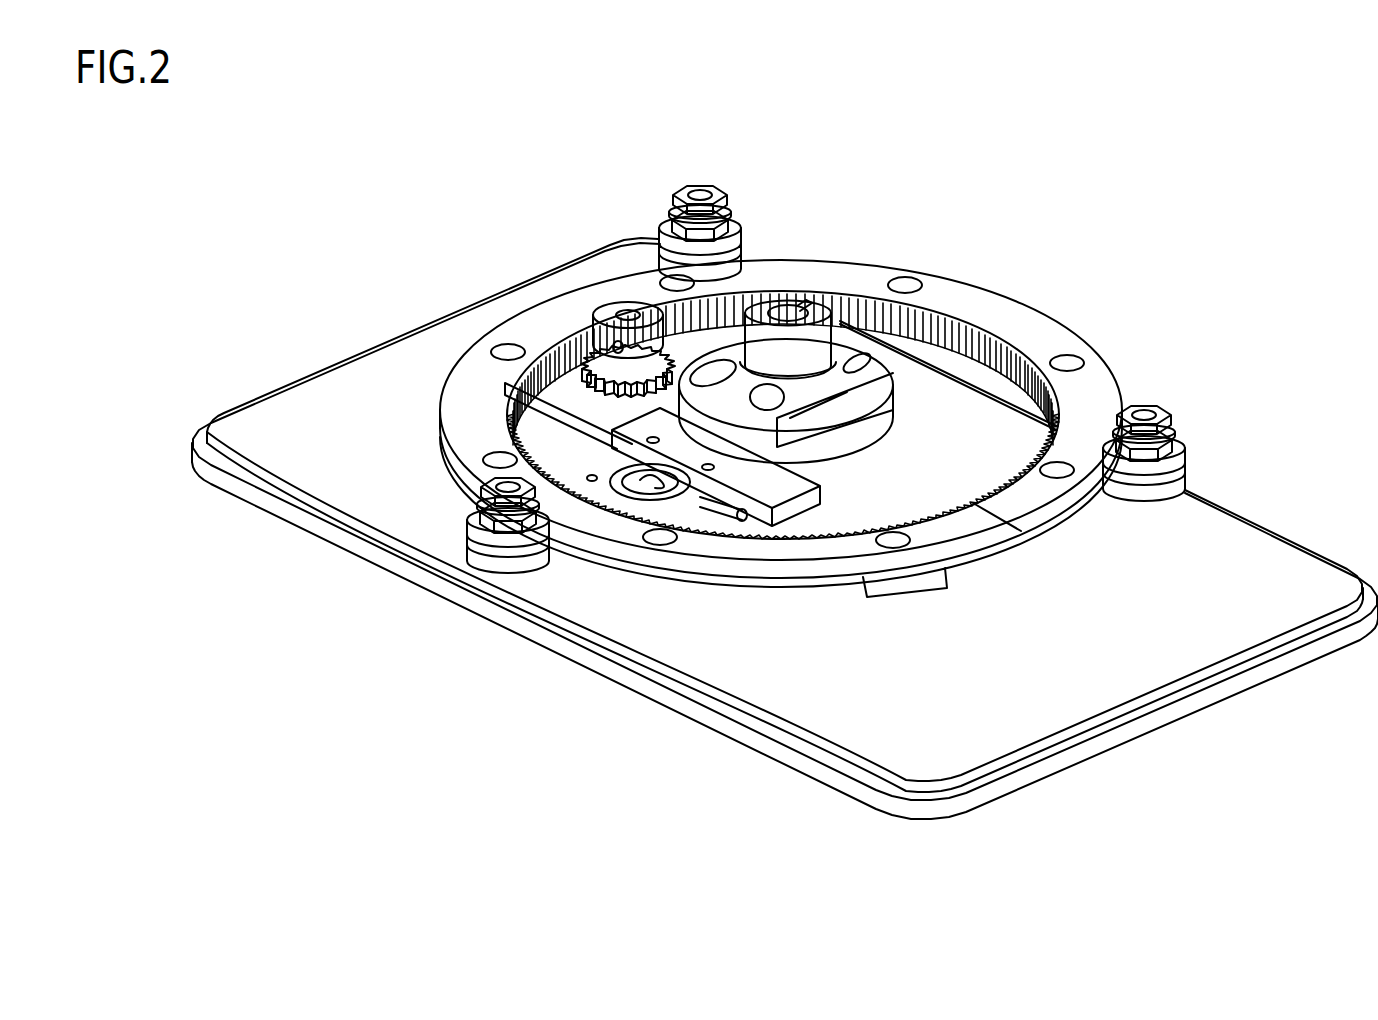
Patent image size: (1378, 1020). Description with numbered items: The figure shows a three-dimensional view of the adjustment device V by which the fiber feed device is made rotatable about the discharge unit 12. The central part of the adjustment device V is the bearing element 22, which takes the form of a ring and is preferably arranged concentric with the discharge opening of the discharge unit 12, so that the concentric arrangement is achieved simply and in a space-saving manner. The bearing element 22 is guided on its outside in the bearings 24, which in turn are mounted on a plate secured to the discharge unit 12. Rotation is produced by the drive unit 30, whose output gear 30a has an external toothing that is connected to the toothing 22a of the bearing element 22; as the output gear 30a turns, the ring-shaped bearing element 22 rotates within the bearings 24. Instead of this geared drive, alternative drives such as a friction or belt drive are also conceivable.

The discharge unit 12 is at (783, 300).
The bearing element 22 is at (1010, 313).
The toothing 22a is at (550, 330).
The bearings 24 is at (700, 190).
The drive unit 30 is at (612, 318).
The output gear 30a is at (505, 388).
The adjustment device V is at (1063, 324).